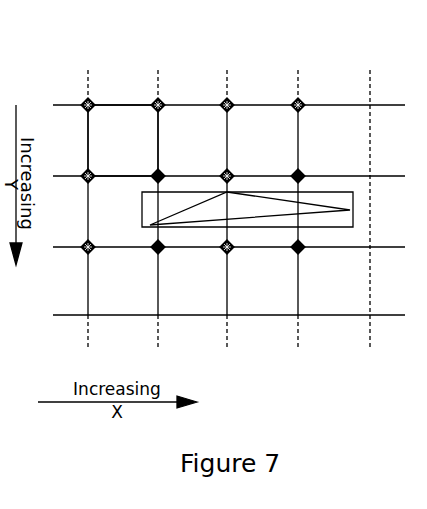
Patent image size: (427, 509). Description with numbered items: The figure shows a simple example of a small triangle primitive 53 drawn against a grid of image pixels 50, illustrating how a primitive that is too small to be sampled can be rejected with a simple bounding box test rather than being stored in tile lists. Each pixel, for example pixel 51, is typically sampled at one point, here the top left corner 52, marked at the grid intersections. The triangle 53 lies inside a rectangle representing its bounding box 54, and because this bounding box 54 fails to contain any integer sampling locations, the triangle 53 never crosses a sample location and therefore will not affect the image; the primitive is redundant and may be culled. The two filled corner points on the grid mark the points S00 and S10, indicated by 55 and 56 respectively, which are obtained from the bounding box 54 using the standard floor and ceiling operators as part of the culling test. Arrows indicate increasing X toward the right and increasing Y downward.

The grid of image pixels 50 is at (88, 280).
The pixel 51 is at (123, 138).
The sample location 52 is at (93, 100).
The triangle primitive 53 is at (258, 205).
The bounding box 54 is at (353, 192).
The S00 bounding box corner point 55 is at (162, 251).
The S10 bounding box corner point 56 is at (162, 171).